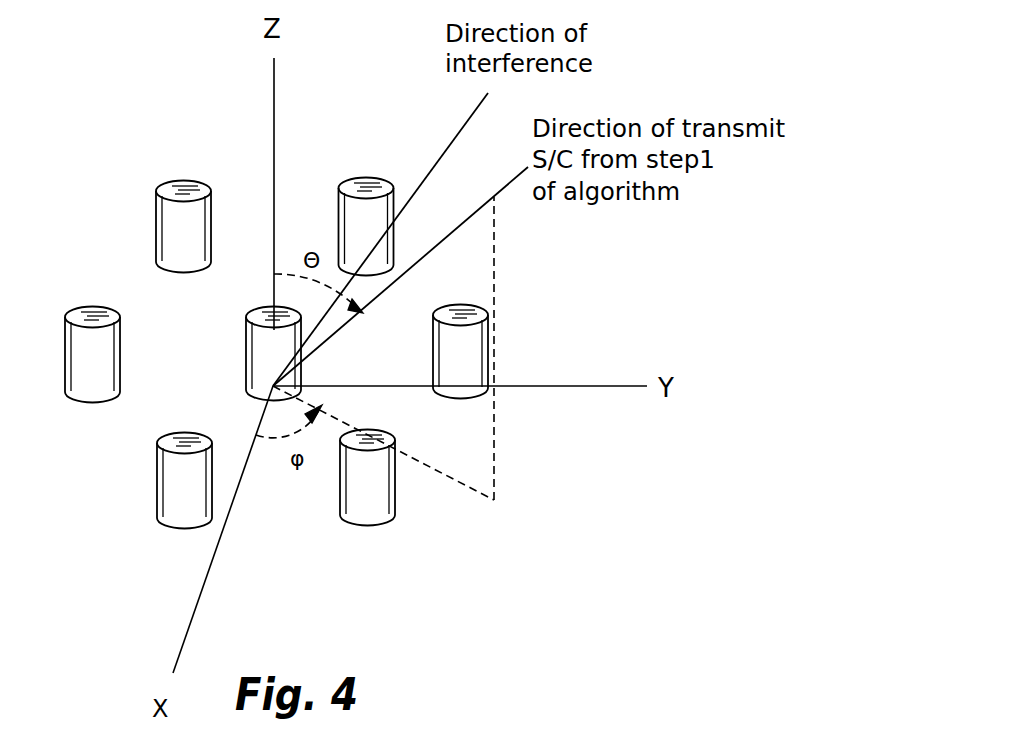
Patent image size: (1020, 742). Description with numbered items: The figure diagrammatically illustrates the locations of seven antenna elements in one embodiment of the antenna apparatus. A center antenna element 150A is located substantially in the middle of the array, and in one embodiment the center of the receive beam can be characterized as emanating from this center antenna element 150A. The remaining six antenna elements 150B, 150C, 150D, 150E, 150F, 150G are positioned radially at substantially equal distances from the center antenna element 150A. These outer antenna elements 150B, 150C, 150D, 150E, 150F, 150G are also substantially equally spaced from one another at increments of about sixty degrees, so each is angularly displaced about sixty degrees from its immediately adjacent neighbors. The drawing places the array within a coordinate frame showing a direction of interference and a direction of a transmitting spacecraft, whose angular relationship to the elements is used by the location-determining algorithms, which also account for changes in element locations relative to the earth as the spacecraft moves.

The center antenna element 150A is at (247, 352).
The antenna element 150B is at (368, 522).
The antenna element 150C is at (485, 340).
The antenna element 150D is at (362, 178).
The antenna element 150E is at (156, 213).
The antenna element 150F is at (77, 390).
The antenna element 150G is at (183, 525).